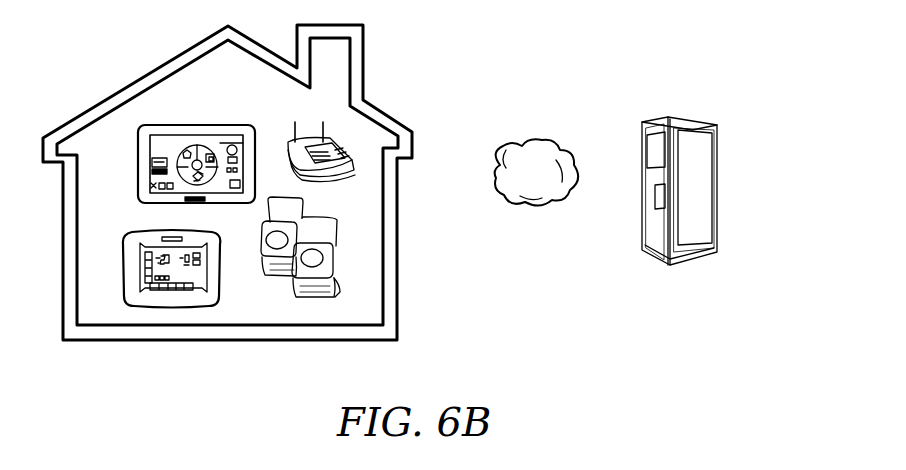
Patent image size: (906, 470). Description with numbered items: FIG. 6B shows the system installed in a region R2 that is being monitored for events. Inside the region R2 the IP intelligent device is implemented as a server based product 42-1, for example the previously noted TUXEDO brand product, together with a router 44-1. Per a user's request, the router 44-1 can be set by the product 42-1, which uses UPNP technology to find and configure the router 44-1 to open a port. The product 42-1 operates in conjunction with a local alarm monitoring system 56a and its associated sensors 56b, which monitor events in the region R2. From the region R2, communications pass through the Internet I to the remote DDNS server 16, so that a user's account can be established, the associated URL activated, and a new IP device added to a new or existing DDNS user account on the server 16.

The region R2 is at (137, 73).
The server based product 42-1 is at (182, 124).
The router 44-1 is at (309, 131).
The local alarm monitoring system 56a is at (143, 232).
The sensors 56b is at (320, 214).
The Internet I is at (528, 136).
The server 16 is at (733, 124).